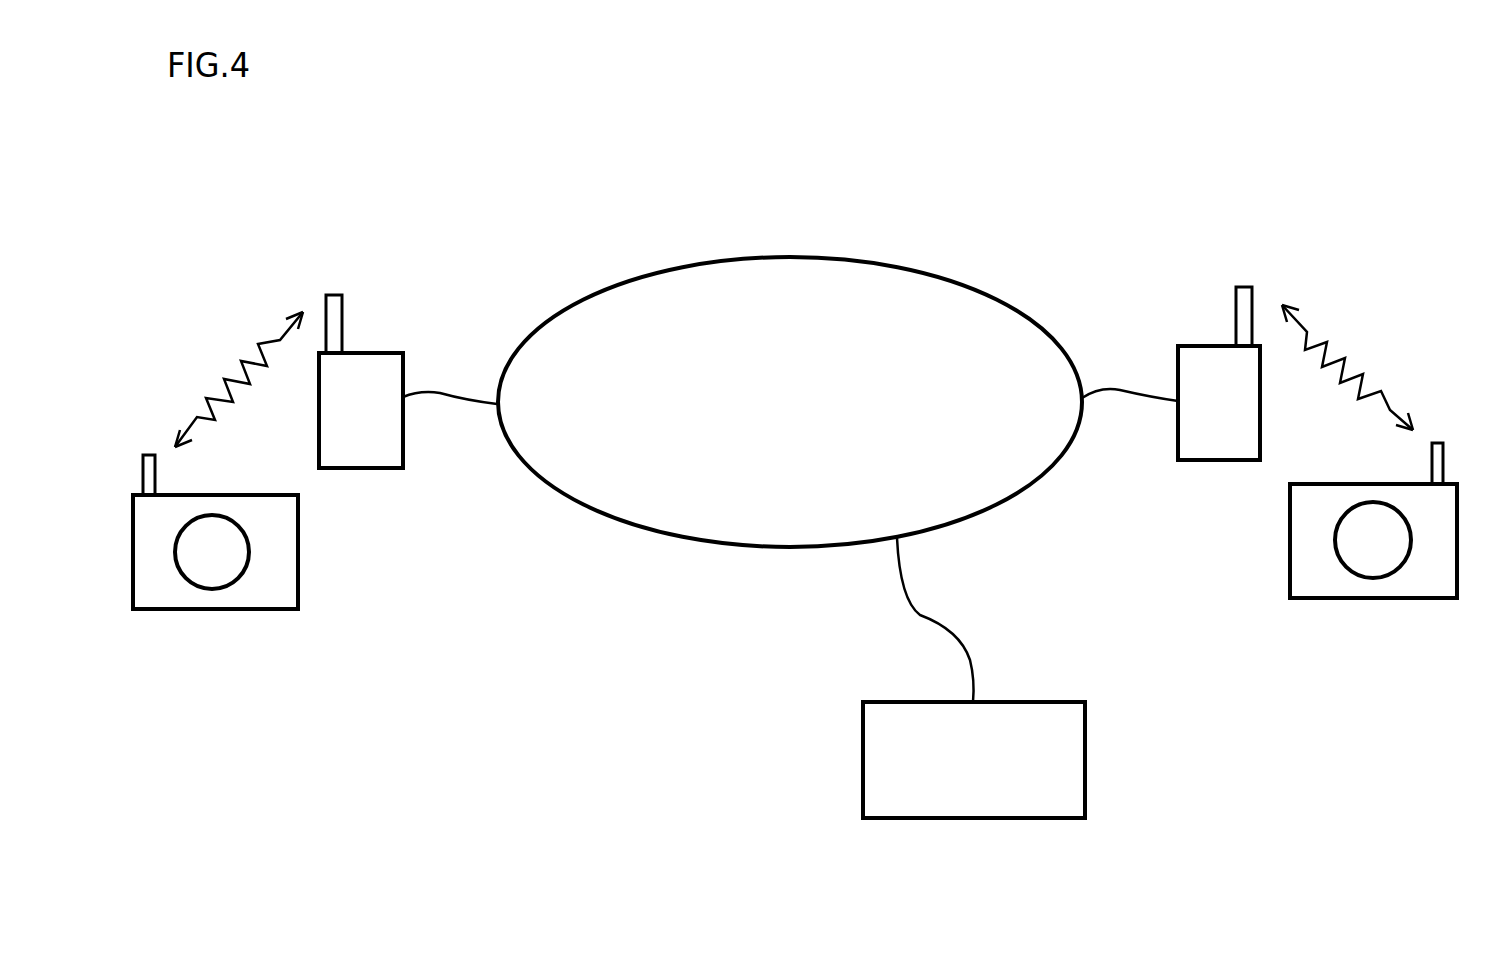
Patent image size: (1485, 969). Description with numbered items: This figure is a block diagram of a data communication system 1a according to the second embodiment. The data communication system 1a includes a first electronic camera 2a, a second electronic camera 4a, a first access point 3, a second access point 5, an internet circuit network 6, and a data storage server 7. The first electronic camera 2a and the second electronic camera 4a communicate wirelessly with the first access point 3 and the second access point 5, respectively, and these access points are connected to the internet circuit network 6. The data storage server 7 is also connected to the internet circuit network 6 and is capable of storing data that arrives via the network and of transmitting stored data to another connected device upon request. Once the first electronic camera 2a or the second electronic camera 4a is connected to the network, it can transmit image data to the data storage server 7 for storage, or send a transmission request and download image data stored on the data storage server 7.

The data communication system 1a is at (623, 676).
The first electronic camera 2a is at (227, 609).
The first access point 3 is at (365, 468).
The second electronic camera 4a is at (1407, 598).
The second access point 5 is at (1222, 460).
The internet circuit network 6 is at (808, 257).
The data storage server 7 is at (975, 818).